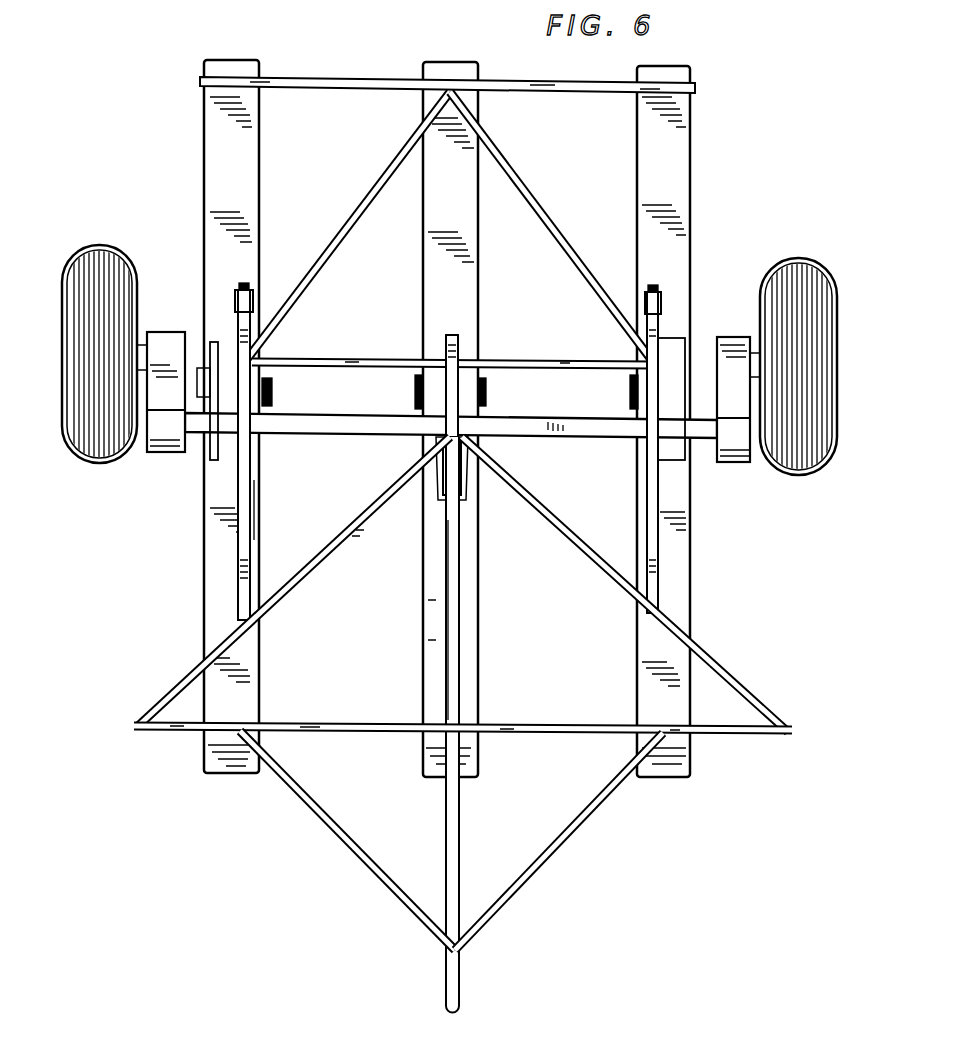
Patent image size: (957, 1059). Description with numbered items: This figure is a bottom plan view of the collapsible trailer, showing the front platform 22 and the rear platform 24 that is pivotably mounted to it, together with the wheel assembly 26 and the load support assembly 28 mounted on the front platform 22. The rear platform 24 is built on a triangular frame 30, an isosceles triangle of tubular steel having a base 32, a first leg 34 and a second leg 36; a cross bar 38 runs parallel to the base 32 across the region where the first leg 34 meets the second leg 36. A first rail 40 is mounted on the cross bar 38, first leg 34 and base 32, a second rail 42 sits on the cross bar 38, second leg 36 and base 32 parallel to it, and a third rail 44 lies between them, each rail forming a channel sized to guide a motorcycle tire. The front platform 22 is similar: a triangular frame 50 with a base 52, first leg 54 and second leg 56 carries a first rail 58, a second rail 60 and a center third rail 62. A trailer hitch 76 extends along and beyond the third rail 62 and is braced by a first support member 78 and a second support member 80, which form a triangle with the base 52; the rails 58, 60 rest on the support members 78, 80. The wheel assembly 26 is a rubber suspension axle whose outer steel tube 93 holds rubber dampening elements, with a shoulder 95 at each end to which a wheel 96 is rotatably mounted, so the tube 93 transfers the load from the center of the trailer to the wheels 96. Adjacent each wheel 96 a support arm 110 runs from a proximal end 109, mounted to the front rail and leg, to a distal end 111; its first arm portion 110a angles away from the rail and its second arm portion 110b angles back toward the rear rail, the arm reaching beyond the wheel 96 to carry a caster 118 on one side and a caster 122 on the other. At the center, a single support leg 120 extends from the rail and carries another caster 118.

The front platform 22 is at (728, 596).
The rear platform 24 is at (714, 187).
The wheel assembly 26 is at (542, 414).
The load support assembly 28 is at (418, 405).
The triangular frame 30 is at (548, 176).
The base 32 is at (357, 356).
The first leg 34 is at (582, 250).
The second leg 36 is at (340, 230).
The cross bar 38 is at (362, 78).
The first rail 40 is at (696, 274).
The second rail 42 is at (203, 152).
The third rail 44 is at (418, 301).
The triangular frame 50 is at (352, 485).
The base 52 is at (540, 724).
The first leg 54 is at (530, 520).
The second leg 56 is at (372, 532).
The first rail 58 is at (633, 690).
The second rail 60 is at (264, 667).
The third rail 62 is at (482, 612).
The trailer hitch 76 is at (462, 804).
The first support member 78 is at (535, 878).
The second support member 80 is at (360, 866).
The outer steel tube 93 is at (428, 478).
The shoulder 95 is at (165, 455).
The wheel 96 is at (115, 465).
The proximal end 109 is at (258, 548).
The support arm 110 is at (272, 418).
The first arm portion 110a is at (252, 492).
The second arm portion 110b is at (232, 320).
The distal end 111 is at (268, 300).
The caster 118 is at (238, 290).
The support leg 120 is at (462, 350).
The caster 122 is at (446, 495).